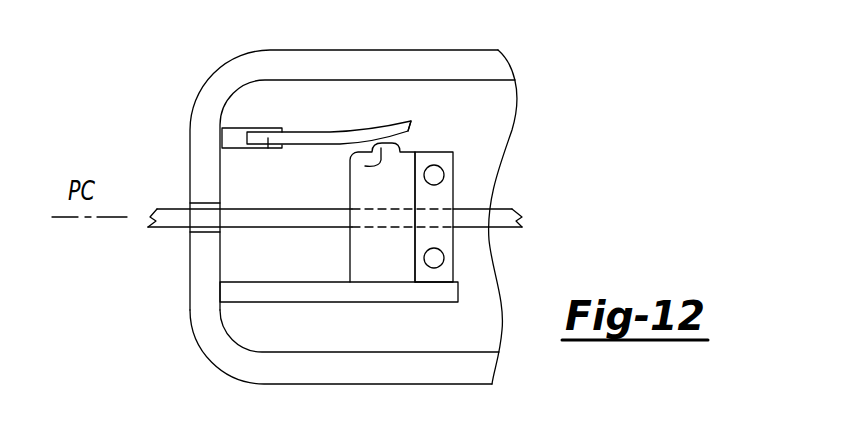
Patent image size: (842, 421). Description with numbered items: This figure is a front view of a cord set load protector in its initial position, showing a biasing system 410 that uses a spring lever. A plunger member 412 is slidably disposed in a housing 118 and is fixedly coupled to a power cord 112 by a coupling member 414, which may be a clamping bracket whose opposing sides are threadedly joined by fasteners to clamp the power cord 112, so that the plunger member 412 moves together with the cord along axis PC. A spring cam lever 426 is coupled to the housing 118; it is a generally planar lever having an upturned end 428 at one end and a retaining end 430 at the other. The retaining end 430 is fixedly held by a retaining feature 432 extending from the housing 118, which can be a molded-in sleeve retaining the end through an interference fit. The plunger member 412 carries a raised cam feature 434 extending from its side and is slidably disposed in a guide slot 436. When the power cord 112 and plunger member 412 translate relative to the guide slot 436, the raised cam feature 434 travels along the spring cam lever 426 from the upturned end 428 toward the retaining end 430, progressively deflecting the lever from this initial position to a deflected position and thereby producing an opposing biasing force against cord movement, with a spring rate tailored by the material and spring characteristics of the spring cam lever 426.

The biasing system 410 is at (538, 70).
The housing 118 is at (191, 148).
The power cord 112 is at (163, 228).
The retaining feature 432 is at (233, 136).
The spring cam lever 426 is at (313, 133).
The upturned end 428 is at (414, 122).
The retaining end 430 is at (268, 148).
The plunger member 412 is at (384, 278).
The raised cam feature 434 is at (363, 166).
The coupling member 414 is at (448, 193).
The guide slot 436 is at (333, 283).